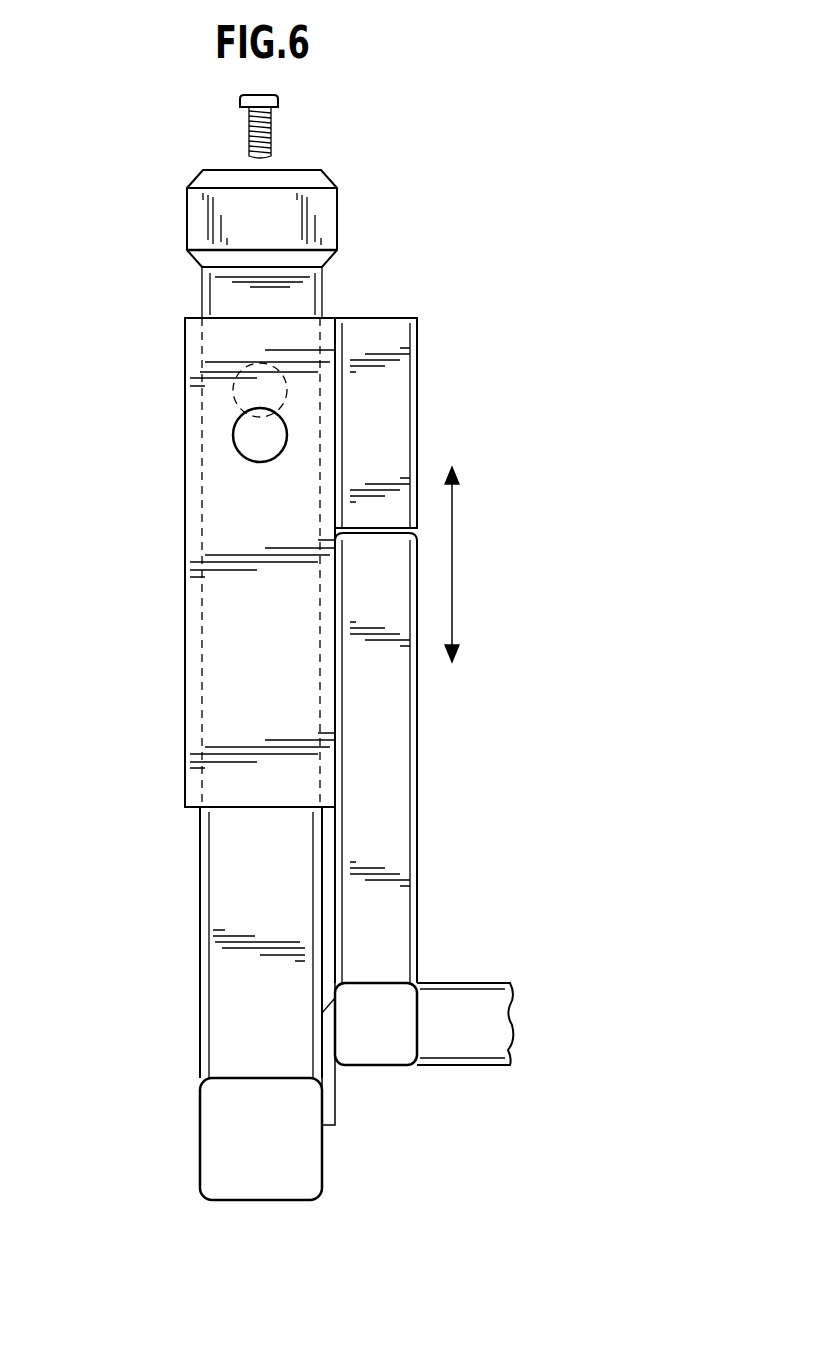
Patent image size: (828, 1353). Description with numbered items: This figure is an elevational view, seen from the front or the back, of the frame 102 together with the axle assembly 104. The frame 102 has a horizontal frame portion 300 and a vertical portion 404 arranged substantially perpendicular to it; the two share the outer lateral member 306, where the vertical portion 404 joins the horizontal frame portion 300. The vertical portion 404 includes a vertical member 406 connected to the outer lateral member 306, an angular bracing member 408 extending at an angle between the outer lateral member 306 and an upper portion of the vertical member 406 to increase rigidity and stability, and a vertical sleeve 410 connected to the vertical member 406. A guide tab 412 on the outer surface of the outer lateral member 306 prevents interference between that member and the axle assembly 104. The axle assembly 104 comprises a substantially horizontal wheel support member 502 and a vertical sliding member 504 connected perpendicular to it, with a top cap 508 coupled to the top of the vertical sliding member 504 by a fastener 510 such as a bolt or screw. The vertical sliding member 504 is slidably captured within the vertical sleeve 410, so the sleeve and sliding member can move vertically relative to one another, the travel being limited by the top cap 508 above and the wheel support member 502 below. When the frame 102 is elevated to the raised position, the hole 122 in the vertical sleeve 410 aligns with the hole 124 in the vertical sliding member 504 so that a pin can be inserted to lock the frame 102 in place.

The frame 102 is at (487, 950).
The axle assembly 104 is at (227, 1200).
The hole 122 is at (238, 437).
The hole 124 is at (222, 388).
The horizontal frame portion 300 is at (542, 1030).
The outer lateral member 306 is at (423, 1066).
The vertical portion 404 is at (388, 273).
The vertical member 406 is at (393, 408).
The angular bracing member 408 is at (387, 728).
The vertical sleeve 410 is at (197, 598).
The guide tab 412 is at (337, 1082).
The wheel support member 502 is at (200, 1157).
The vertical sliding member 504 is at (235, 907).
The top cap 508 is at (186, 208).
The fastener 510 is at (246, 117).